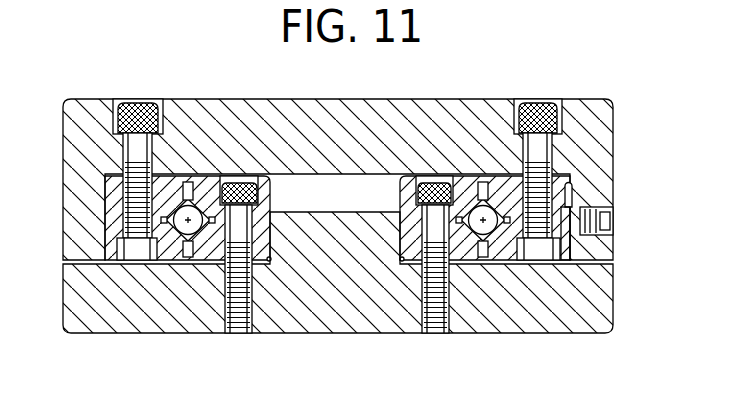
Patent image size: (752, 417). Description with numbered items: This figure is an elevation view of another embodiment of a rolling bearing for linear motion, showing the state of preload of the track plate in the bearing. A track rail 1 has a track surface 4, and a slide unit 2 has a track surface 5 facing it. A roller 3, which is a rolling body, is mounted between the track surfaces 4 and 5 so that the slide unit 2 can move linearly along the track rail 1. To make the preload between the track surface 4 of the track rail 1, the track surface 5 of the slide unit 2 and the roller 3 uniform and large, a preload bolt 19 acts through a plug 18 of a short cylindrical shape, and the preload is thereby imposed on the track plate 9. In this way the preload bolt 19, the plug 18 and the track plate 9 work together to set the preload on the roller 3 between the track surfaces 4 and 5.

The track rail 1 is at (357, 318).
The slide unit 2 is at (402, 110).
The roller 3 is at (472, 200).
The track surface of the track rail 4 is at (479, 238).
The track surface of the slide unit 5 is at (493, 230).
The track plate 9 is at (573, 191).
The plug 18 is at (573, 236).
The preload bolt 19 is at (610, 225).